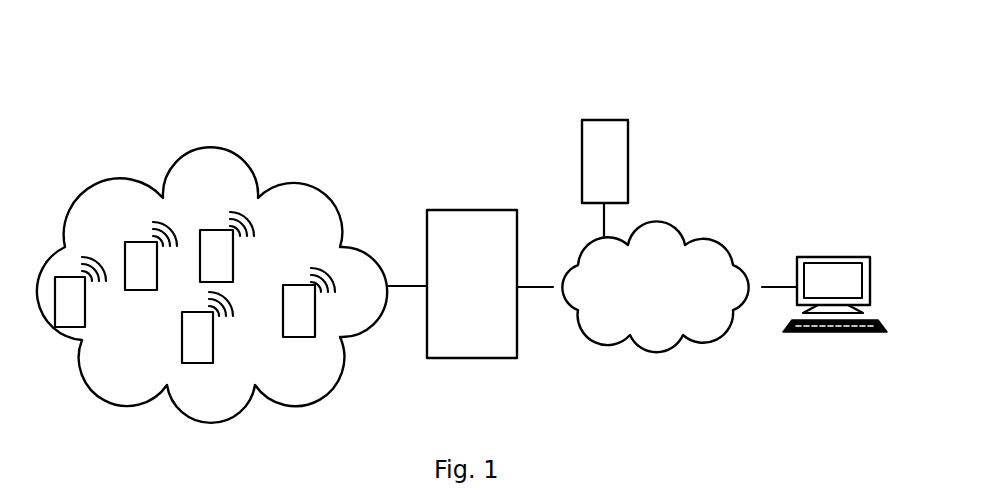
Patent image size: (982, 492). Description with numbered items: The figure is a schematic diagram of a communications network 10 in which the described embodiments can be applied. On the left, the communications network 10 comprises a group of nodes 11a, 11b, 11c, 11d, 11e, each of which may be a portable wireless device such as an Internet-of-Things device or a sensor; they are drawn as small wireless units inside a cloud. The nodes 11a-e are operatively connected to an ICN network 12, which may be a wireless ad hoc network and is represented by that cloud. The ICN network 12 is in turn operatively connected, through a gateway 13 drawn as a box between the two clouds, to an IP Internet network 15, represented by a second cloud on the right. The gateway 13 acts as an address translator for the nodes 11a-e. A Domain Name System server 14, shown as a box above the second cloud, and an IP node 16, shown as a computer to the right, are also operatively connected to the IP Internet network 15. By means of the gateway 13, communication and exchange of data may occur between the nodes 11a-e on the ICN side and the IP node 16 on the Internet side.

The communications network 10 is at (762, 68).
The node 11a is at (302, 298).
The node 11b is at (225, 247).
The node 11c is at (63, 287).
The node 11d is at (140, 272).
The node 11e is at (193, 338).
The ICN network 12 is at (288, 181).
The gateway 13 is at (472, 232).
The Domain Name System (DNS) server 14 is at (585, 145).
The IP Internet network 15 is at (660, 320).
The IP node 16 is at (842, 257).